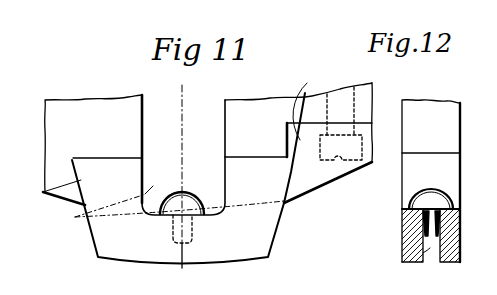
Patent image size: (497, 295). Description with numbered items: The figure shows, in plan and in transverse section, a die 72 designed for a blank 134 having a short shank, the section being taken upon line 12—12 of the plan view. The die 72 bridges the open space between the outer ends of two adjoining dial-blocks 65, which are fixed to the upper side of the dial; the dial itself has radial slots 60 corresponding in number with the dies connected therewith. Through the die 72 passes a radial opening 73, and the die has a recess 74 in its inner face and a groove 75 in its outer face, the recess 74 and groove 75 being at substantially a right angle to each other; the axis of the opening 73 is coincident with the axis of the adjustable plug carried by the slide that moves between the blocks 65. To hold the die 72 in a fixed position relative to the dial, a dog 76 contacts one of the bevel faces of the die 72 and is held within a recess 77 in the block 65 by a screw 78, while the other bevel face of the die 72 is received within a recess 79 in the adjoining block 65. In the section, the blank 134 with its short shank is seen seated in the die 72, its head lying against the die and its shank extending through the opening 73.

In FIG. 11, the section line 12 is at (183, 187).
In FIG. 11, the radial slot 60 is at (140, 93).
In FIG. 11, the dial-block 65 is at (209, 143).
In FIG. 12, the dial-block 65 is at (431, 181).
In FIG. 11, the die 72 is at (222, 178).
In FIG. 12, the die 72 is at (403, 227).
In FIG. 12, the radial opening 73 is at (405, 213).
In FIG. 11, the recess 74 is at (155, 210).
In FIG. 12, the groove 75 is at (402, 255).
In FIG. 11, the dog 76 is at (328, 137).
In FIG. 11, the recess 77 is at (304, 86).
In FIG. 11, the screw 78 is at (347, 160).
In FIG. 11, the recess 79 is at (50, 192).
In FIG. 11, the blank 134 is at (173, 211).
In FIG. 12, the blank 134 is at (416, 196).